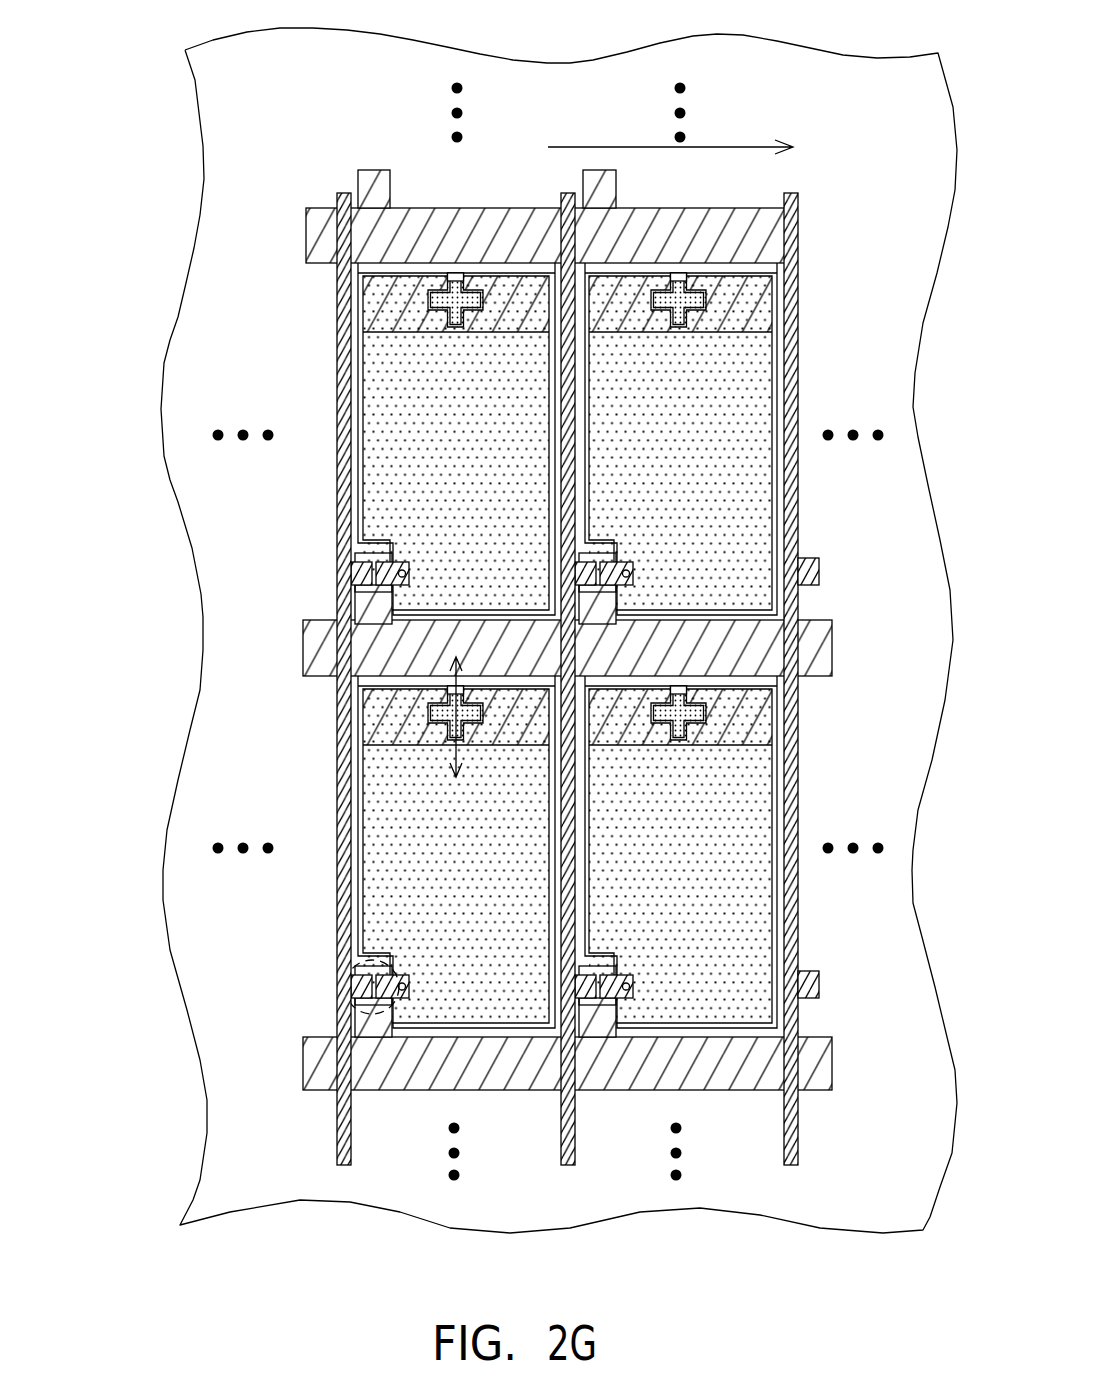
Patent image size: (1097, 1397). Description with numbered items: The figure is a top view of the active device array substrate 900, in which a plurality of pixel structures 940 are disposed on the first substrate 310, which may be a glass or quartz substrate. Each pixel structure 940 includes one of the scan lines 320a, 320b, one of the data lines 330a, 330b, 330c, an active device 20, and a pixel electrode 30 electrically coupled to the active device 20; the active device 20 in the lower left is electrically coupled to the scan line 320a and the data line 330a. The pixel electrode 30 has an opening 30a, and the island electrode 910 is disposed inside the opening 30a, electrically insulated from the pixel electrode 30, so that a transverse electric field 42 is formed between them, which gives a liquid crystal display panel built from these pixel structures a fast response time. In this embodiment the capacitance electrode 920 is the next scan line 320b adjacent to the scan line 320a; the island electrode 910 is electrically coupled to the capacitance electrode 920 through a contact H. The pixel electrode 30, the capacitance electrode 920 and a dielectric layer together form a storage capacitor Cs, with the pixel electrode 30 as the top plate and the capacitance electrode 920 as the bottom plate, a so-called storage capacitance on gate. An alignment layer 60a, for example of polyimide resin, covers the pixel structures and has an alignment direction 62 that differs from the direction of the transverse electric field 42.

The alignment layer 60a is at (870, 75).
The alignment direction 62 is at (752, 145).
The opening 30a is at (280, 638).
The capacitance electrode 920 is at (323, 663).
The scan line 320b is at (453, 623).
The contact H is at (433, 688).
The island electrode 910 is at (280, 692).
The transverse electric field 42 is at (480, 745).
The pixel structure 940 is at (433, 839).
The storage capacitor Cs is at (474, 742).
The pixel electrode 30 is at (367, 942).
The active device 20 is at (253, 977).
The scan line 320a is at (313, 1063).
The data line 330a is at (337, 1115).
The data line 330b is at (567, 1165).
The data line 330c is at (790, 1165).
The first substrate 310 is at (220, 1177).
The active device array substrate 900 is at (945, 1293).